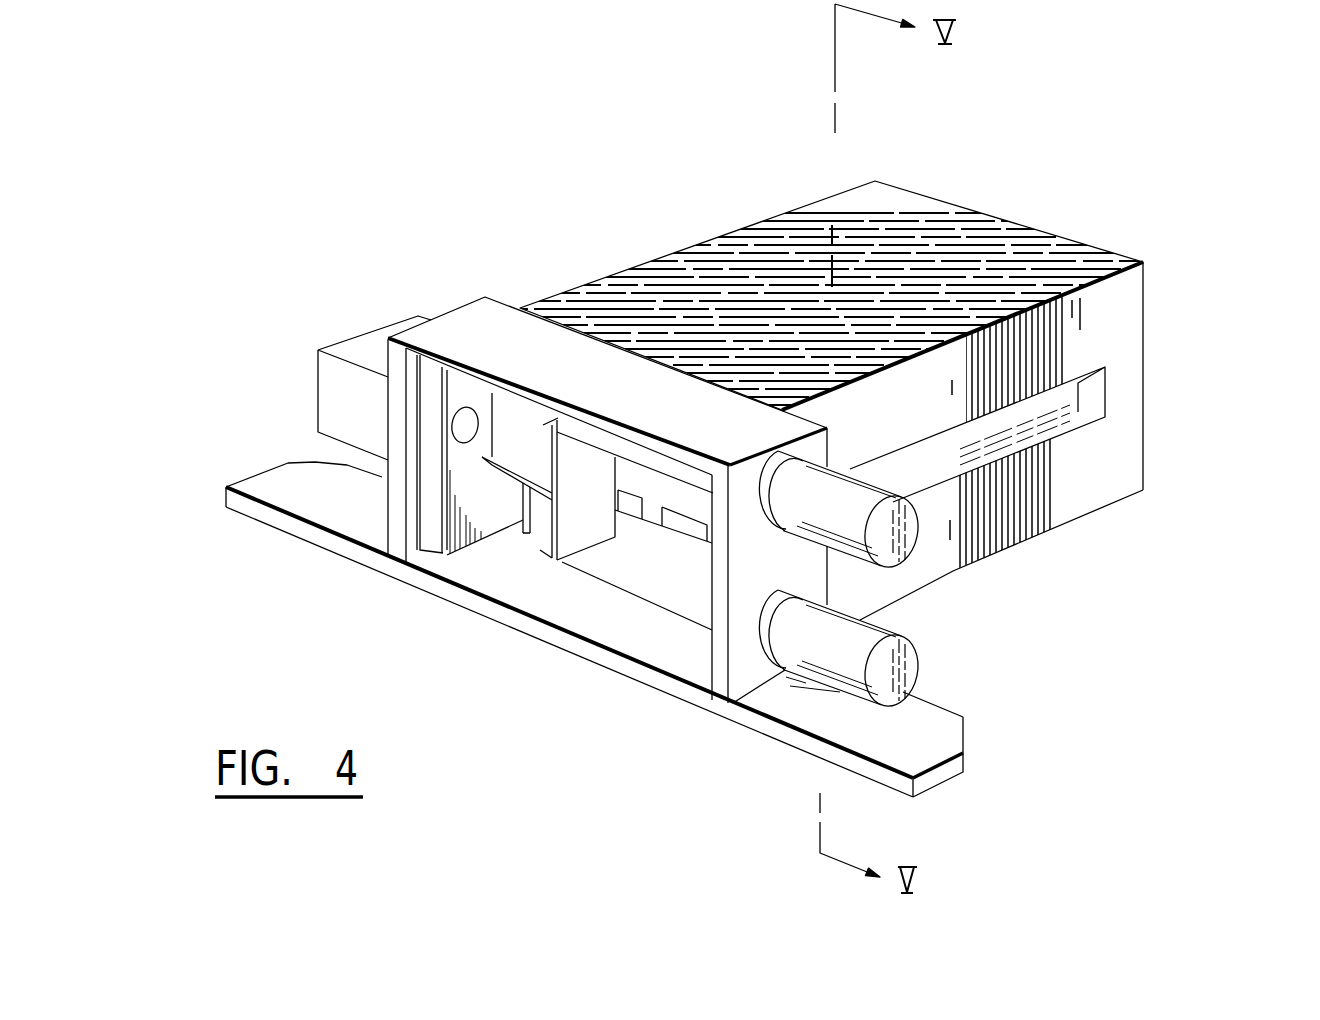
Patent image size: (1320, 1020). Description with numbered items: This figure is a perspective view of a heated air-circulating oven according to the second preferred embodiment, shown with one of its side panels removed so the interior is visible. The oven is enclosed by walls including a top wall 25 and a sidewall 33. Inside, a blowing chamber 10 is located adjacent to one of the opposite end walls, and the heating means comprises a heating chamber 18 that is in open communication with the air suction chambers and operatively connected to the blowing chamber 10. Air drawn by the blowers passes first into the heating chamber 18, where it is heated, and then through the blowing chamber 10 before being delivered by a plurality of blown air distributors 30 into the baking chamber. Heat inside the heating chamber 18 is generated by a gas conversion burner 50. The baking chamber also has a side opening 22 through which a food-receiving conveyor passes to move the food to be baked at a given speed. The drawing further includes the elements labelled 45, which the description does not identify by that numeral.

The blowing chamber 10 is at (650, 593).
The heating chamber 18 is at (524, 423).
The side opening 22 is at (1048, 403).
The top wall 25 is at (653, 270).
The blown air distributors 30 is at (675, 520).
The sidewall 33 is at (1133, 288).
The cylindrical connectors 45 is at (898, 660).
The gas conversion burner 50 is at (337, 393).